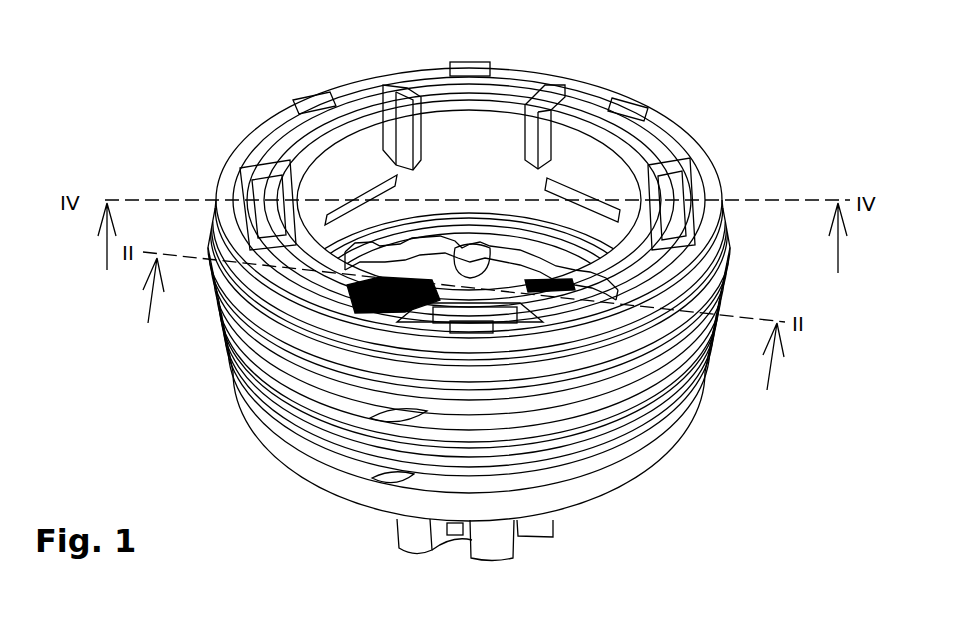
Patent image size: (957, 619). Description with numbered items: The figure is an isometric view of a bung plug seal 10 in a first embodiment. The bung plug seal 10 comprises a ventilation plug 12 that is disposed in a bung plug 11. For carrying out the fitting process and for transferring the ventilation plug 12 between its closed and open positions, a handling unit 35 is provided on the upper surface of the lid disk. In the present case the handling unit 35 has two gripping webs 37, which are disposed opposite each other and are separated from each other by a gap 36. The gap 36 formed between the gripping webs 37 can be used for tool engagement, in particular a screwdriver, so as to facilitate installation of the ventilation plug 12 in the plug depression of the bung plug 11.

The bung plug seal 10 is at (712, 107).
The bung plug 11 is at (722, 164).
The ventilation plug 12 is at (483, 240).
The handling unit 35 is at (423, 240).
The gap 36 is at (440, 263).
The gripping webs 37 is at (365, 257).